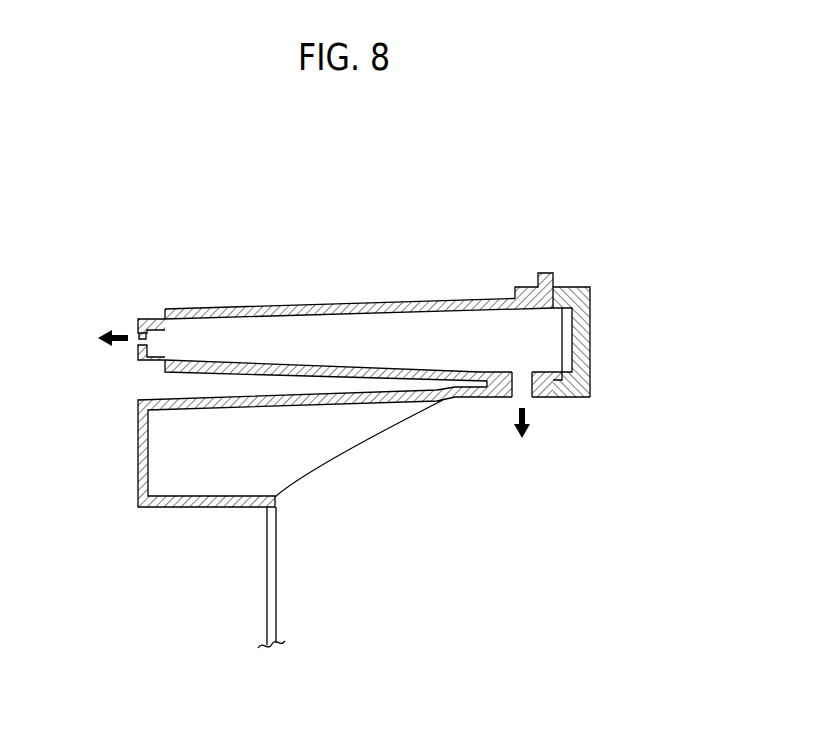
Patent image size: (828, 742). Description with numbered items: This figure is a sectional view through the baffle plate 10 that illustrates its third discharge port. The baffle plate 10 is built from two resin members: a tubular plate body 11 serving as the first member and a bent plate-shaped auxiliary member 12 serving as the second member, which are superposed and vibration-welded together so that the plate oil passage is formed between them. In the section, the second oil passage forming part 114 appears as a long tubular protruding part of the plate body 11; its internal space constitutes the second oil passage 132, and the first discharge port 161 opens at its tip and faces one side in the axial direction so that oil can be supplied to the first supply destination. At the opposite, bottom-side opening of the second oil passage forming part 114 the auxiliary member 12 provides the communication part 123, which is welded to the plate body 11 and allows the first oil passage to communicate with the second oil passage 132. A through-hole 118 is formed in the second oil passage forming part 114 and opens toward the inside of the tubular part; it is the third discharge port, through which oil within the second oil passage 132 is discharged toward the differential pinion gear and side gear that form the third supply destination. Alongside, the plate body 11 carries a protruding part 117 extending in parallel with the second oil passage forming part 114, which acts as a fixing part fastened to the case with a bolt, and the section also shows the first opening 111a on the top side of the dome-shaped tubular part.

The baffle plate 10 is at (368, 422).
The plate body 11 is at (549, 266).
The auxiliary member 12 is at (600, 307).
The second oil passage forming part 114 is at (213, 307).
The second oil passage 132 is at (348, 335).
The first discharge port 161 is at (137, 337).
The communication part 123 is at (592, 355).
The through-hole 118 is at (523, 388).
The protruding part 117 is at (182, 505).
The first opening 111a is at (272, 598).